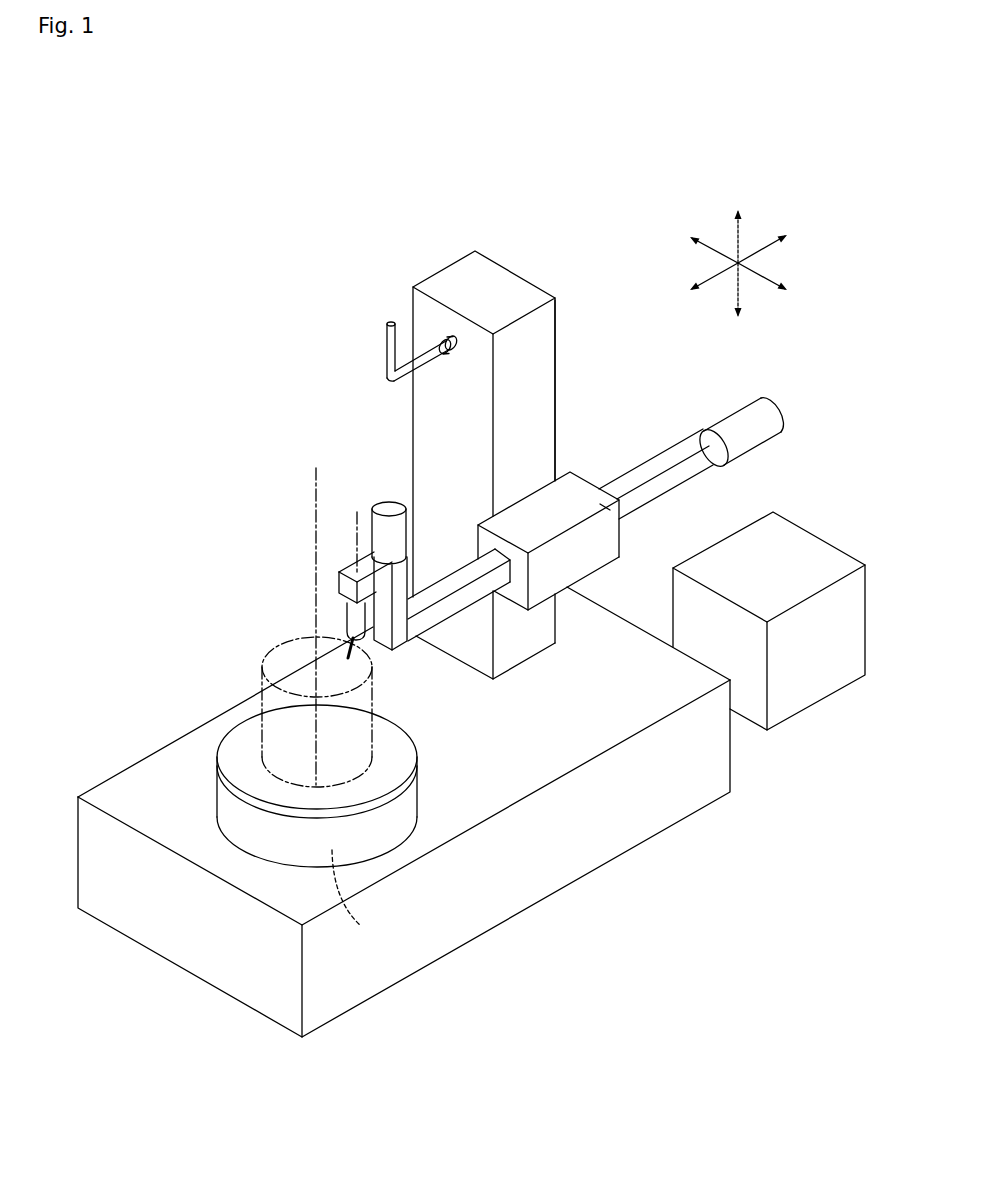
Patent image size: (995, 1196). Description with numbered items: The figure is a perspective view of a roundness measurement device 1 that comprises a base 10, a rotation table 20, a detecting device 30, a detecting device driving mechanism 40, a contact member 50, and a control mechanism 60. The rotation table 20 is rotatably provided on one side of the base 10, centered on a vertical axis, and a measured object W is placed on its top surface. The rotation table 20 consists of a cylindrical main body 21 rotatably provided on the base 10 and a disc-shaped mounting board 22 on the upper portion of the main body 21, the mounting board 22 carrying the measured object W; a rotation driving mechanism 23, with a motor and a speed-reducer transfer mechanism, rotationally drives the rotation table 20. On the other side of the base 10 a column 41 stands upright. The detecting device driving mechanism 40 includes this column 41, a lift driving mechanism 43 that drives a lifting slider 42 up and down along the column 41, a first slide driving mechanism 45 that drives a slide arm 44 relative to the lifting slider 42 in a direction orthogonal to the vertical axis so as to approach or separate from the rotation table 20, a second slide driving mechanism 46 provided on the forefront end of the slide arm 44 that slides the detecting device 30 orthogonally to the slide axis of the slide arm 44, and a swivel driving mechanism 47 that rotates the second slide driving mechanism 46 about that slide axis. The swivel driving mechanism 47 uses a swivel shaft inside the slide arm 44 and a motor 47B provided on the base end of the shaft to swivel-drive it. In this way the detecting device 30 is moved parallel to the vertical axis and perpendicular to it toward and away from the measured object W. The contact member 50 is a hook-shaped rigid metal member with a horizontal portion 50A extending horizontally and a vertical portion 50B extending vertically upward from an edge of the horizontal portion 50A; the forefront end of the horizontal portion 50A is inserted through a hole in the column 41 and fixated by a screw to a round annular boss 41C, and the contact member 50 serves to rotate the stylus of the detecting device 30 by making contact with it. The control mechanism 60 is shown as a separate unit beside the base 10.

The roundness measurement device 1 is at (509, 166).
The base 10 is at (490, 914).
The rotation table 20 is at (322, 815).
The main body 21 is at (301, 857).
The mounting board 22 is at (409, 777).
The rotation driving mechanism 23 is at (353, 901).
The detecting device 30 is at (347, 617).
The detecting device driving mechanism 40 is at (436, 246).
The column 41 is at (491, 275).
The boss 41C is at (453, 339).
The lifting slider 42 is at (576, 487).
The lift driving mechanism 43 is at (538, 360).
The slide arm 44 is at (666, 489).
The first slide driving mechanism 45 is at (602, 551).
The second slide driving mechanism 46 is at (390, 502).
The swivel driving mechanism 47 is at (776, 441).
The motor 47B is at (753, 433).
The contact member 50 is at (387, 304).
The horizontal portion 50A is at (431, 362).
The vertical portion 50B is at (388, 352).
The control mechanism 60 is at (818, 689).
The measured object W is at (262, 675).